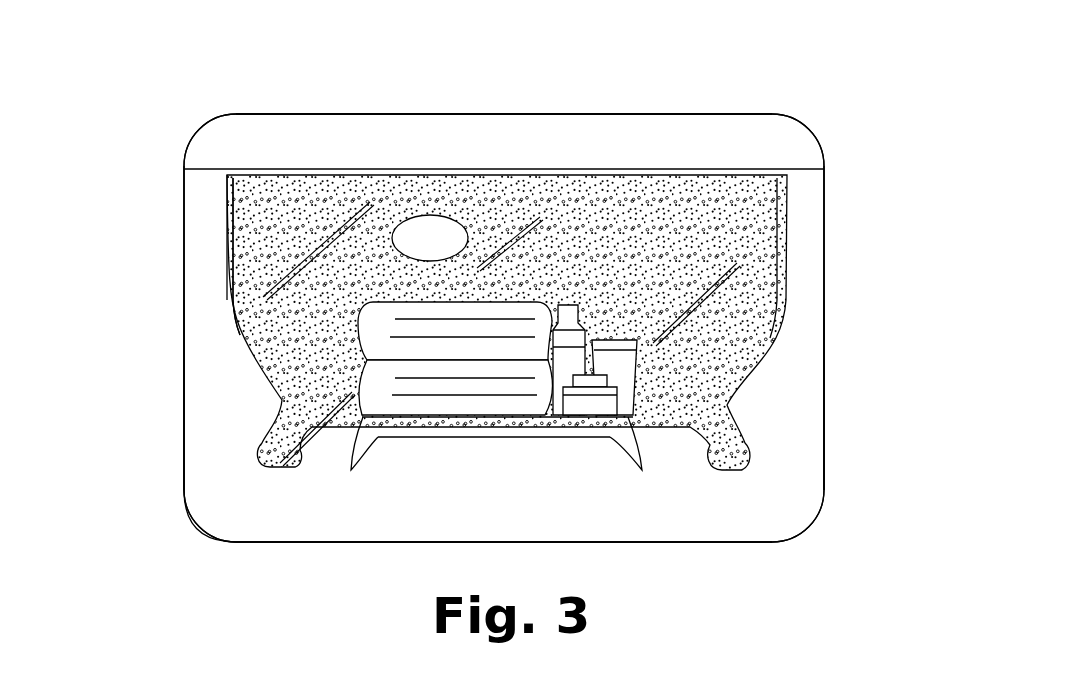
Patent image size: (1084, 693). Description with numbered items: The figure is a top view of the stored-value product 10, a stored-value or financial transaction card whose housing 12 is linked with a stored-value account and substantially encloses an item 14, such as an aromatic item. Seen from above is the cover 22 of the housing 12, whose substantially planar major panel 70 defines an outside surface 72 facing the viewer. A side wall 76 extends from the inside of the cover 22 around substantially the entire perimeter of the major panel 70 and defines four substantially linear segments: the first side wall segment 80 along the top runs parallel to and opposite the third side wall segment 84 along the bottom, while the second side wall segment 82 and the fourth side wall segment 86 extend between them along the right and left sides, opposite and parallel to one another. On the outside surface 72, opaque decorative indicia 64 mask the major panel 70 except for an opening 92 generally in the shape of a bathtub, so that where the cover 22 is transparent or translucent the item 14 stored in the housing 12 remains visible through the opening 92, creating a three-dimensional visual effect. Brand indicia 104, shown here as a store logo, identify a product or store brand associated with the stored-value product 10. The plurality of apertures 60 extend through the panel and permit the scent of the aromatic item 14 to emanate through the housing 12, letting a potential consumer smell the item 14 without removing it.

The stored-value product 10 is at (188, 98).
The housing 12 is at (194, 223).
The item 14 is at (344, 198).
The cover 22 is at (213, 277).
The apertures 60 is at (245, 215).
The decorative indicia 64 is at (344, 438).
The major panel 70 is at (208, 385).
The outside surface 72 is at (227, 452).
The side wall 76 is at (826, 350).
The first side wall segment 80 is at (722, 113).
The second side wall segment 82 is at (826, 265).
The third side wall segment 84 is at (367, 542).
The fourth side wall segment 86 is at (182, 315).
The opening 92 is at (267, 188).
The brand indicia 104 is at (444, 201).